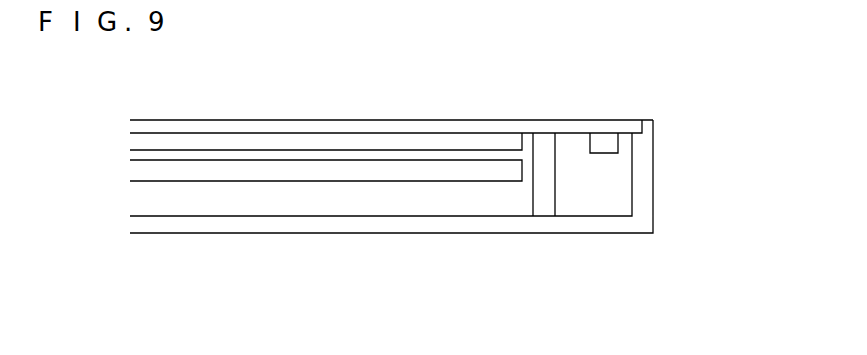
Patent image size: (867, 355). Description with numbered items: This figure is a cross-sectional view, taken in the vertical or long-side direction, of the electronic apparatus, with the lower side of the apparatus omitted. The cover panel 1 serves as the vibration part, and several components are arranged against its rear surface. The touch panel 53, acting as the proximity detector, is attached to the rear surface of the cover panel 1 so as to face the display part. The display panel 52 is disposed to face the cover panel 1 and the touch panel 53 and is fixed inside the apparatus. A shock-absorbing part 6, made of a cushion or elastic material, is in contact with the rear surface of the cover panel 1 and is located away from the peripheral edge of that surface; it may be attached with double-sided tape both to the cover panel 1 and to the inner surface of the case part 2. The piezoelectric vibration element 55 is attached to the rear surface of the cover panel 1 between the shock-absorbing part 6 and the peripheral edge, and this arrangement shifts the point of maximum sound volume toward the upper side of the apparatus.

The cover panel 1 is at (360, 127).
The case part 2 is at (442, 227).
The shock-absorbing part 6 is at (543, 150).
The display panel 52 is at (237, 167).
The touch panel 53 is at (495, 142).
The piezoelectric vibration element 55 is at (605, 148).